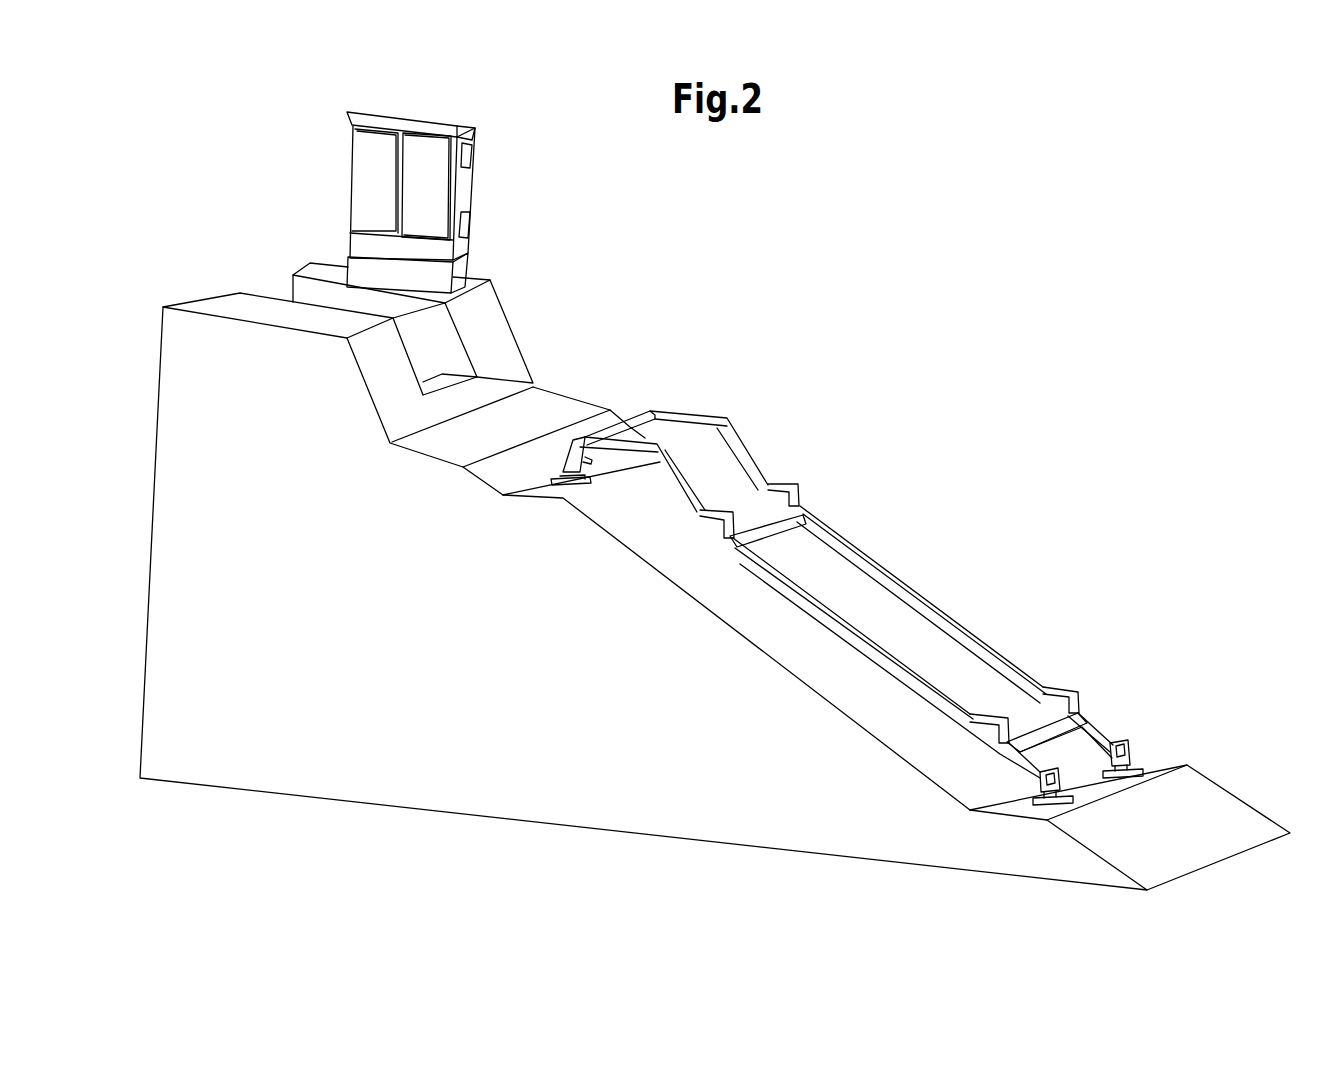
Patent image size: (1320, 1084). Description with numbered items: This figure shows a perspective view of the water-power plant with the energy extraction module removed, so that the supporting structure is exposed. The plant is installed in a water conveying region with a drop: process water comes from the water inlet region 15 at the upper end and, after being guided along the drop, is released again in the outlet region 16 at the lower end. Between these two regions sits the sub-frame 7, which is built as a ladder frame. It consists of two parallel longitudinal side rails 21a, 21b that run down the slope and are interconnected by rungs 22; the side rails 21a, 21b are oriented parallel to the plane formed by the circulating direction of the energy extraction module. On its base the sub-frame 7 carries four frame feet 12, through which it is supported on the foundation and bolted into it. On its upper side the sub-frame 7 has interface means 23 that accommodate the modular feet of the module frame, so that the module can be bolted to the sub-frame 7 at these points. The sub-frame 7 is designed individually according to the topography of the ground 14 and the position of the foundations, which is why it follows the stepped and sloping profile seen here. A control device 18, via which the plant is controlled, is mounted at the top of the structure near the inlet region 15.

The sub-frame 7 is at (852, 646).
The frame feet 12 is at (553, 483).
The ground 14 is at (250, 771).
The water inlet region 15 is at (643, 540).
The outlet region 16 is at (1137, 806).
The control device 18 is at (470, 186).
The longitudinal side rail 21a is at (843, 633).
The longitudinal side rail 21b is at (860, 567).
The rungs 22 is at (640, 428).
The interface means 23 is at (783, 490).